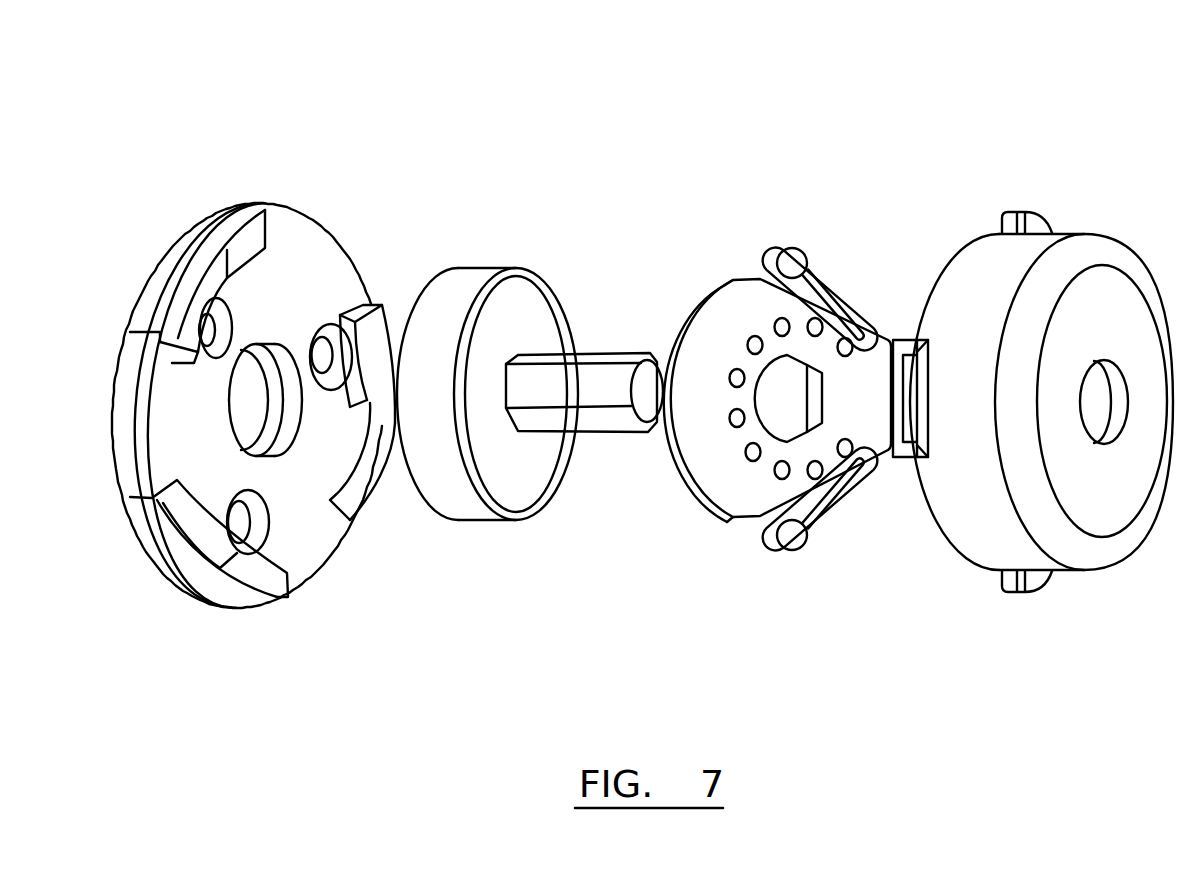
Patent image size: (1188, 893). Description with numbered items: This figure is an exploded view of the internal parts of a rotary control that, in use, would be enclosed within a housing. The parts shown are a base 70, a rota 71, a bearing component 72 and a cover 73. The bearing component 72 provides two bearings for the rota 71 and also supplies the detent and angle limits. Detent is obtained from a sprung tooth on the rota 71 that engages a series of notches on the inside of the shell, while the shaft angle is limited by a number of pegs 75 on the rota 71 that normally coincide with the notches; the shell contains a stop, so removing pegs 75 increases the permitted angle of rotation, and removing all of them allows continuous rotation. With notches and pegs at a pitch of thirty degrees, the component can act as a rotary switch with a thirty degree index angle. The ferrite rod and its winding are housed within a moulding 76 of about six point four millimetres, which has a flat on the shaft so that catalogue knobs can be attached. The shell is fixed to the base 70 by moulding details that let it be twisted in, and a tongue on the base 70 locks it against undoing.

The base 70 is at (308, 260).
The rota 71 is at (515, 265).
The bearing component 72 is at (737, 307).
The cover 73 is at (1083, 252).
The pegs 75 is at (850, 336).
The moulding 76 is at (607, 420).